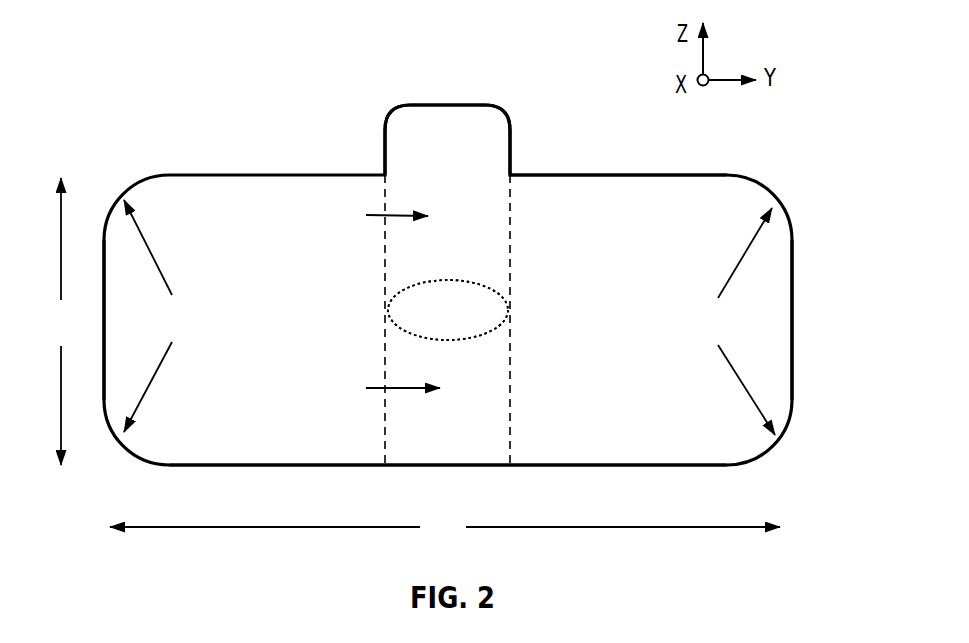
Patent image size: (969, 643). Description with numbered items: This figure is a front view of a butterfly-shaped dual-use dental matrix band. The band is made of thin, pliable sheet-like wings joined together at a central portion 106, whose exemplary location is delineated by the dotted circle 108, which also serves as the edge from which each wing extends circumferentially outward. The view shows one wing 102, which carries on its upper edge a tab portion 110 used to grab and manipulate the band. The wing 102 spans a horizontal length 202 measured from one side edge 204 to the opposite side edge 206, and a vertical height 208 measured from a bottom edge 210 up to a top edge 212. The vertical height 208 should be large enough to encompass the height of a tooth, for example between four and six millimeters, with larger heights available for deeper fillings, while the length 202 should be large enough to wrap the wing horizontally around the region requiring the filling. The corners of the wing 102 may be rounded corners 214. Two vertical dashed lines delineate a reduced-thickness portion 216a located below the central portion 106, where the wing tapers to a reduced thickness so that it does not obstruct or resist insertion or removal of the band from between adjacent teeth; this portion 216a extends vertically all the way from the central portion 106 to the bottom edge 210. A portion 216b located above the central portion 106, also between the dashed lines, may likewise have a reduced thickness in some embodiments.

The wing portion 102 is at (207, 235).
The central portion 106 is at (449, 318).
The dotted circle 108 is at (468, 339).
The tab portion 110 is at (440, 135).
The horizontal length 202 is at (462, 543).
The side edge 204 is at (103, 262).
The side edge 206 is at (793, 303).
The vertical height 208 is at (78, 339).
The bottom edge 210 is at (365, 467).
The top edge 212 is at (573, 172).
The rounded corners 214 is at (449, 317).
The reduced-thickness portion 216a is at (378, 384).
The reduced-thickness portion 216b is at (372, 208).